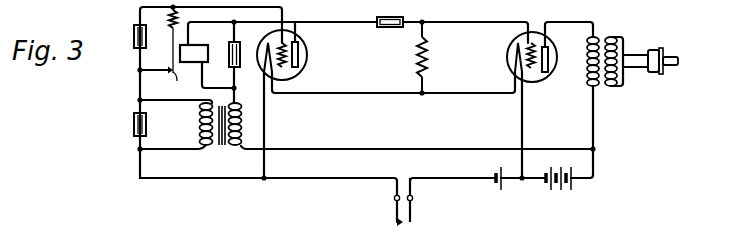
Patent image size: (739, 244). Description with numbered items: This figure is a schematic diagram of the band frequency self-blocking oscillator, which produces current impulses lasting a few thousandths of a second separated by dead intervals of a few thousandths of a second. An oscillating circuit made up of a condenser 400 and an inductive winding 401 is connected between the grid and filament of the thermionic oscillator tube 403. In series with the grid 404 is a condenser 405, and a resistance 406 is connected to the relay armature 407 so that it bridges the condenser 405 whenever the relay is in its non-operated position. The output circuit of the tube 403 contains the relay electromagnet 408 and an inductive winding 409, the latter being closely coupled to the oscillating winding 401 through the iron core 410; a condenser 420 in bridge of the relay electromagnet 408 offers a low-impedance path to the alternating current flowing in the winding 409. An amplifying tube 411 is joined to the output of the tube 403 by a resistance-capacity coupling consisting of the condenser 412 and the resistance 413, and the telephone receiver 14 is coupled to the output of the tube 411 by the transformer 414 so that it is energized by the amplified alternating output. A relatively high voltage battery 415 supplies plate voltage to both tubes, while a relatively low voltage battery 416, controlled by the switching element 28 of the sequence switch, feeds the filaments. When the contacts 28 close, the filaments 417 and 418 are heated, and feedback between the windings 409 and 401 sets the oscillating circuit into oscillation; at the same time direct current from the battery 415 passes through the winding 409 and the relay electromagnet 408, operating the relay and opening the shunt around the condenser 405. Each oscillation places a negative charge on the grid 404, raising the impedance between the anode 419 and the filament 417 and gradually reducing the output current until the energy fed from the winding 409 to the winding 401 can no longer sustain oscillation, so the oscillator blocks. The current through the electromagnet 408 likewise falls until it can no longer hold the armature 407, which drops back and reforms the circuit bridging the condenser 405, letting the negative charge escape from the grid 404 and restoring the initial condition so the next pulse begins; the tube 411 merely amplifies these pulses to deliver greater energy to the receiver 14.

The condenser 400 is at (134, 126).
The inductive winding 401 is at (201, 127).
The thermionic oscillator tube 403 is at (305, 64).
The grid 404 is at (288, 39).
The condenser 405 is at (133, 50).
The resistance 406 is at (165, 15).
The relay armature 407 is at (166, 86).
The relay electromagnet 408 is at (205, 44).
The inductive winding 409 is at (242, 132).
The iron core 410 is at (221, 147).
The amplifying tube 411 is at (542, 76).
The condenser 412 is at (395, 28).
The resistance 413 is at (426, 52).
The transformer 414 is at (600, 88).
The high voltage battery 415 is at (562, 190).
The low voltage battery 416 is at (496, 189).
The filament 417 is at (272, 60).
The filament 418 is at (515, 50).
The anode 419 is at (299, 50).
The condenser 420 is at (227, 57).
The switching element 28 is at (410, 222).
The telephone receiver 14 is at (653, 73).